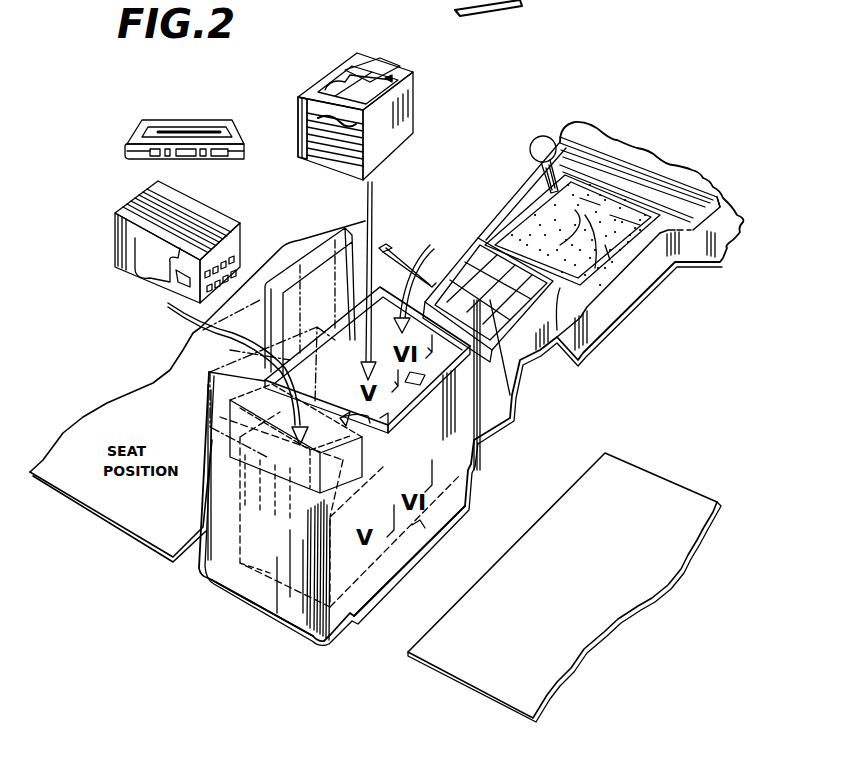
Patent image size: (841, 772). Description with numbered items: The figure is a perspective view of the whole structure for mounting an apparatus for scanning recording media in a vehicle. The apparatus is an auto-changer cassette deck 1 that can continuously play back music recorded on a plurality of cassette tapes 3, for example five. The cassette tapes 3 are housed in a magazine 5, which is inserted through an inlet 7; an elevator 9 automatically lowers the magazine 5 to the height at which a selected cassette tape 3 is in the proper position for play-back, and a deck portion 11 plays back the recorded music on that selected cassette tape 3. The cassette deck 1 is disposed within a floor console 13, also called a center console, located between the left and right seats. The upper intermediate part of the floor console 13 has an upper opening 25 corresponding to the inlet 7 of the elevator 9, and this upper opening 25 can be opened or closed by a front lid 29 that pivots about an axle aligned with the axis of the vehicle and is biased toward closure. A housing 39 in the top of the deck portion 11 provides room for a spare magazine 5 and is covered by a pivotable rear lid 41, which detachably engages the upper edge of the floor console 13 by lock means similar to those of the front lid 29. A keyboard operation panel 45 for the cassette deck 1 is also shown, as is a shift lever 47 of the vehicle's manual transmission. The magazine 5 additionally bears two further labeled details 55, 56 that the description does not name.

The auto-changer cassette deck 1 is at (430, 528).
The cassette tape 3 is at (190, 120).
The magazine 5 is at (352, 75).
The inlet 7 is at (362, 350).
The elevator 9 is at (447, 503).
The deck portion 11 is at (355, 610).
The floor console 13 is at (380, 548).
The upper opening 25 is at (333, 358).
The front lid 29 is at (372, 300).
The housing 39 is at (276, 455).
The rear lid 41 is at (223, 433).
The keyboard operation panel 45 is at (483, 310).
The shift lever 47 is at (530, 154).
The holder top slot 55 is at (372, 70).
The holder side lip 56 is at (300, 100).